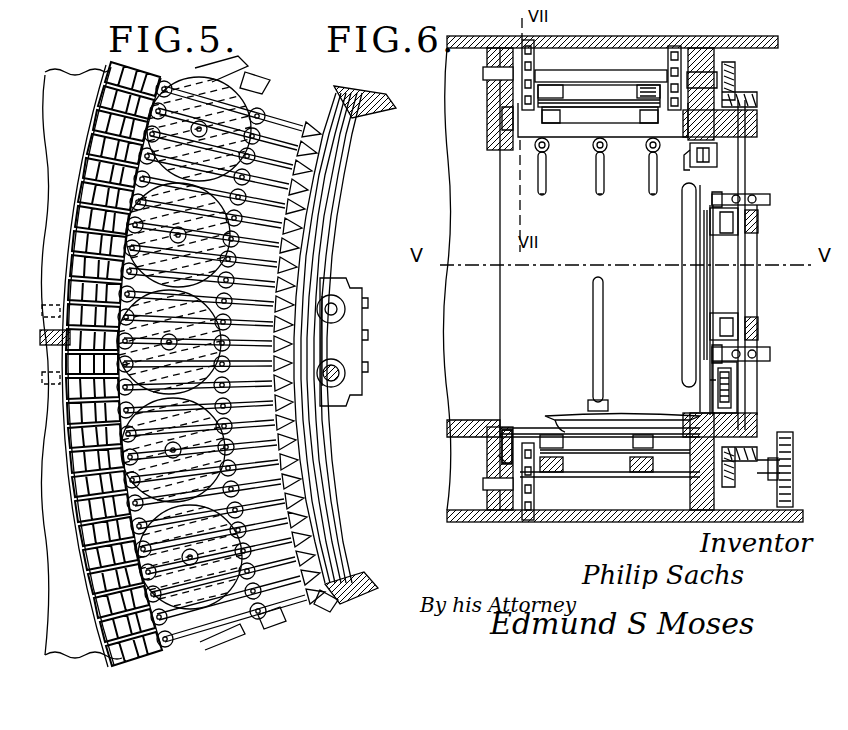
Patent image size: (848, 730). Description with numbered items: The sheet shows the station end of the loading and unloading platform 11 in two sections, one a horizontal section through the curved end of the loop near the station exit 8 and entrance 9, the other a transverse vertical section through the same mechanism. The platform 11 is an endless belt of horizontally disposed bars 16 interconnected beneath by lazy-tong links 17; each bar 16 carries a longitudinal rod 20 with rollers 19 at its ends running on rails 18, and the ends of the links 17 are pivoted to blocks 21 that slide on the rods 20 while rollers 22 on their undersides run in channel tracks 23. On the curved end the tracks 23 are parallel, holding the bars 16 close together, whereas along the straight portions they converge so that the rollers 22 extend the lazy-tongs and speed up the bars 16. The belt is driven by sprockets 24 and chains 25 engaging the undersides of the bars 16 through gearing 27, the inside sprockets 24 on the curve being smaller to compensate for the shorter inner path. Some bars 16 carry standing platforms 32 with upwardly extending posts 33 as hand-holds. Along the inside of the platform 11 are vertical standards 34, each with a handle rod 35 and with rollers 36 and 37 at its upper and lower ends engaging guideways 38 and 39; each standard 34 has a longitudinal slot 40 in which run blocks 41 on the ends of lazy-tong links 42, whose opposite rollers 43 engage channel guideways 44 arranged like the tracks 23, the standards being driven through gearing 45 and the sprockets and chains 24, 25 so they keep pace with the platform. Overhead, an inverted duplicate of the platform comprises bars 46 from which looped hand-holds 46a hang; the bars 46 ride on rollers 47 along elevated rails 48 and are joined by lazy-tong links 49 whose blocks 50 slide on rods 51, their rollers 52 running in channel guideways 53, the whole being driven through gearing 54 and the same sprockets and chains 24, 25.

In FIG. 5, the exit 8 is at (75, 362).
In FIG. 5, the entrance 9 is at (83, 599).
In FIG. 6, the entrance 9 is at (471, 279).
In FIG. 6, the loading and unloading platform 11 is at (600, 413).
In FIG. 5, the bars 16 is at (290, 86).
In FIG. 6, the bars 16 is at (618, 420).
In FIG. 5, the lazy-tong links 17 is at (208, 70).
In FIG. 6, the lazy-tong links 17 is at (590, 480).
In FIG. 6, the rails 18 is at (470, 462).
In FIG. 6, the rollers 19 is at (500, 440).
In FIG. 6, the rod 20 is at (583, 418).
In FIG. 6, the blocks 21 is at (542, 425).
In FIG. 6, the rollers 22 is at (500, 512).
In FIG. 5, the channel tracks 23 is at (122, 66).
In FIG. 6, the channel tracks 23 is at (563, 465).
In FIG. 5, the sprockets 24 is at (78, 280).
In FIG. 6, the sprockets 24 is at (522, 80).
In FIG. 5, the chains 25 is at (88, 372).
In FIG. 6, the chains 25 is at (658, 512).
In FIG. 6, the gearing 27 is at (790, 432).
In FIG. 5, the platforms 32 is at (252, 75).
In FIG. 6, the platforms 32 is at (560, 420).
In FIG. 6, the posts 33 is at (594, 322).
In FIG. 5, the vertical standards 34 is at (344, 98).
In FIG. 6, the vertical standards 34 is at (700, 370).
In FIG. 5, the handle rod 35 is at (330, 608).
In FIG. 6, the handle rod 35 is at (682, 240).
In FIG. 6, the rollers 36 is at (718, 162).
In FIG. 6, the rollers 37 is at (737, 380).
In FIG. 6, the guideway 38 is at (718, 150).
In FIG. 6, the guideway 39 is at (737, 400).
In FIG. 5, the longitudinal slot 40 is at (350, 136).
In FIG. 5, the blocks 41 is at (356, 118).
In FIG. 6, the blocks 41 is at (706, 330).
In FIG. 6, the lazy-tong links 42 is at (745, 294).
In FIG. 5, the rollers 43 is at (392, 102).
In FIG. 6, the rollers 43 is at (730, 228).
In FIG. 5, the channel guideways 44 is at (352, 172).
In FIG. 6, the channel guideways 44 is at (758, 212).
In FIG. 6, the gearing 45 is at (735, 482).
In FIG. 6, the bars 46 is at (582, 140).
In FIG. 6, the hand-holds 46a is at (542, 196).
In FIG. 6, the rollers 47 is at (500, 120).
In FIG. 6, the elevated rails 48 is at (490, 140).
In FIG. 6, the lazy-tong links 49 is at (606, 107).
In FIG. 6, the blocks 50 is at (548, 124).
In FIG. 6, the rods 51 is at (634, 120).
In FIG. 6, the rollers 52 is at (552, 86).
In FIG. 6, the channel guideways 53 is at (560, 86).
In FIG. 6, the gearing 54 is at (740, 76).